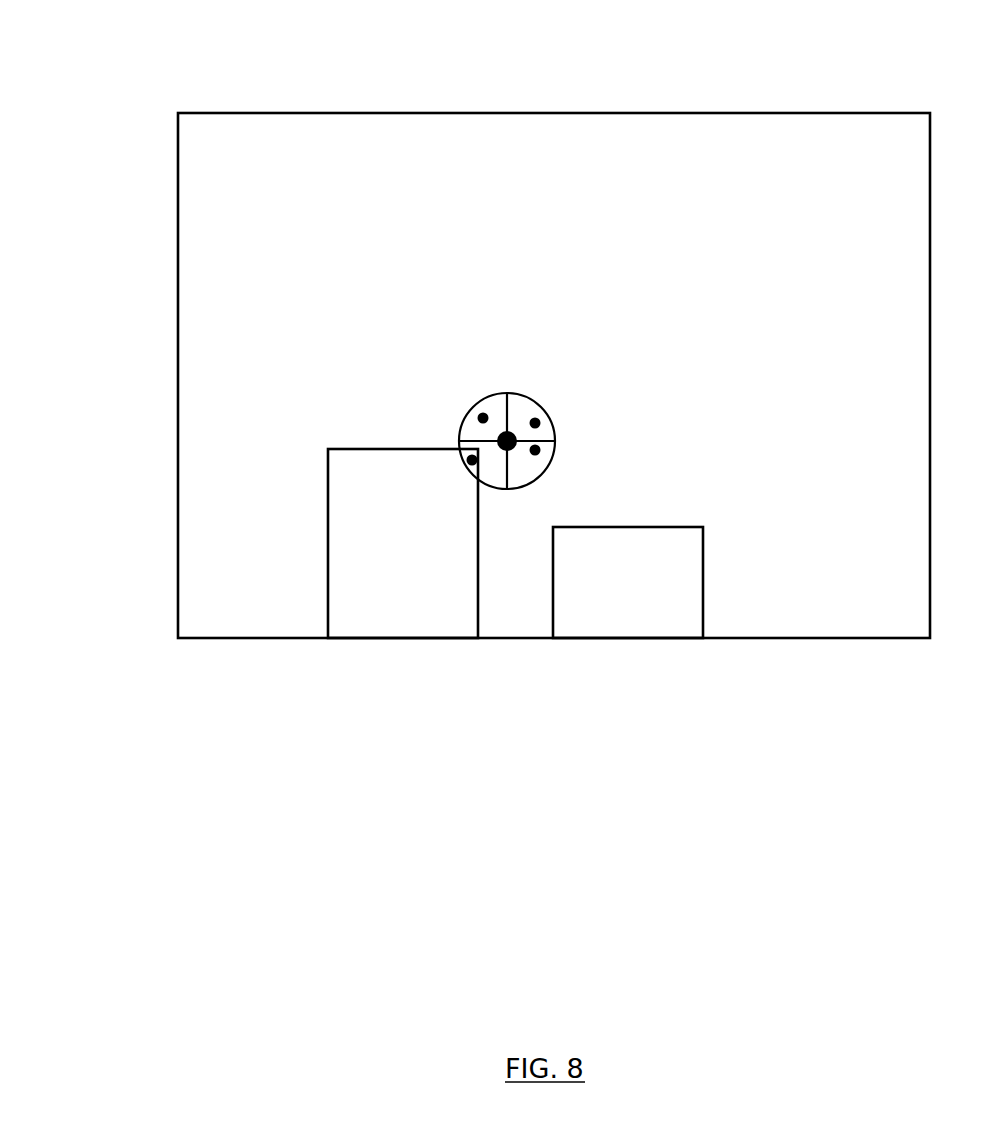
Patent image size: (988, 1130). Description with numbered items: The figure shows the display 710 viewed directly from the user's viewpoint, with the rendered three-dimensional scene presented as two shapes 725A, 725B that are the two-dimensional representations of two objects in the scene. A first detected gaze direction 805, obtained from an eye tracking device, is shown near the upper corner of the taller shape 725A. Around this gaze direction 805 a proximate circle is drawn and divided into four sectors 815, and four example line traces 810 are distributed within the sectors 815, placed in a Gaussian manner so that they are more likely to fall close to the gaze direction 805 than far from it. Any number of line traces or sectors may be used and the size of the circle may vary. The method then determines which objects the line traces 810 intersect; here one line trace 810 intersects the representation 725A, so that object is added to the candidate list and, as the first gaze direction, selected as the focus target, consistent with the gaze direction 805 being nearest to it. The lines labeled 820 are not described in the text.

The 2D display 710 is at (225, 112).
The shape 725A is at (328, 612).
The shape 725B is at (703, 617).
The first detected gaze direction 805 is at (497, 440).
The line traces 810 is at (476, 412).
The sectors / proximate circle 815 is at (492, 393).
The crosshair lines 820 is at (459, 441).